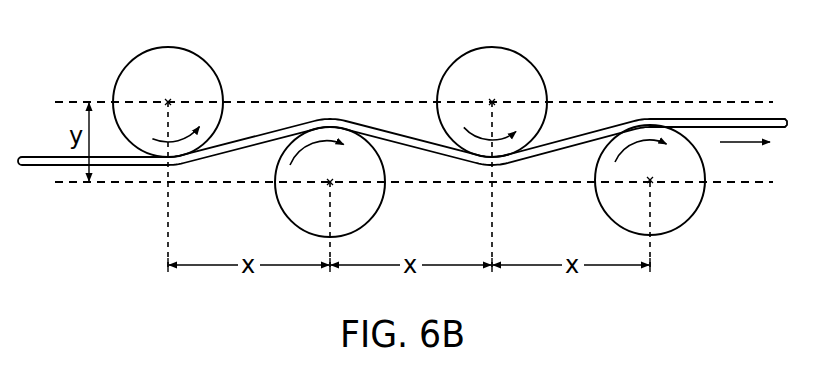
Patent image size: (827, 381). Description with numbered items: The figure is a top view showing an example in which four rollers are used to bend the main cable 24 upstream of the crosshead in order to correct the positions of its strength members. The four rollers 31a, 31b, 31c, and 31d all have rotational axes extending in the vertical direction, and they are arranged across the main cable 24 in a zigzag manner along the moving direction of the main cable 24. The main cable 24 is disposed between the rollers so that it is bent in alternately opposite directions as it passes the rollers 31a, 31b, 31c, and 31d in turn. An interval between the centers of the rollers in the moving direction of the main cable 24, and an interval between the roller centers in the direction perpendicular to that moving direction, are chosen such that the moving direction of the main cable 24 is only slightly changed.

The main cable 24 is at (598, 130).
The roller 31a is at (217, 75).
The roller 31b is at (378, 205).
The roller 31c is at (523, 53).
The roller 31d is at (700, 200).